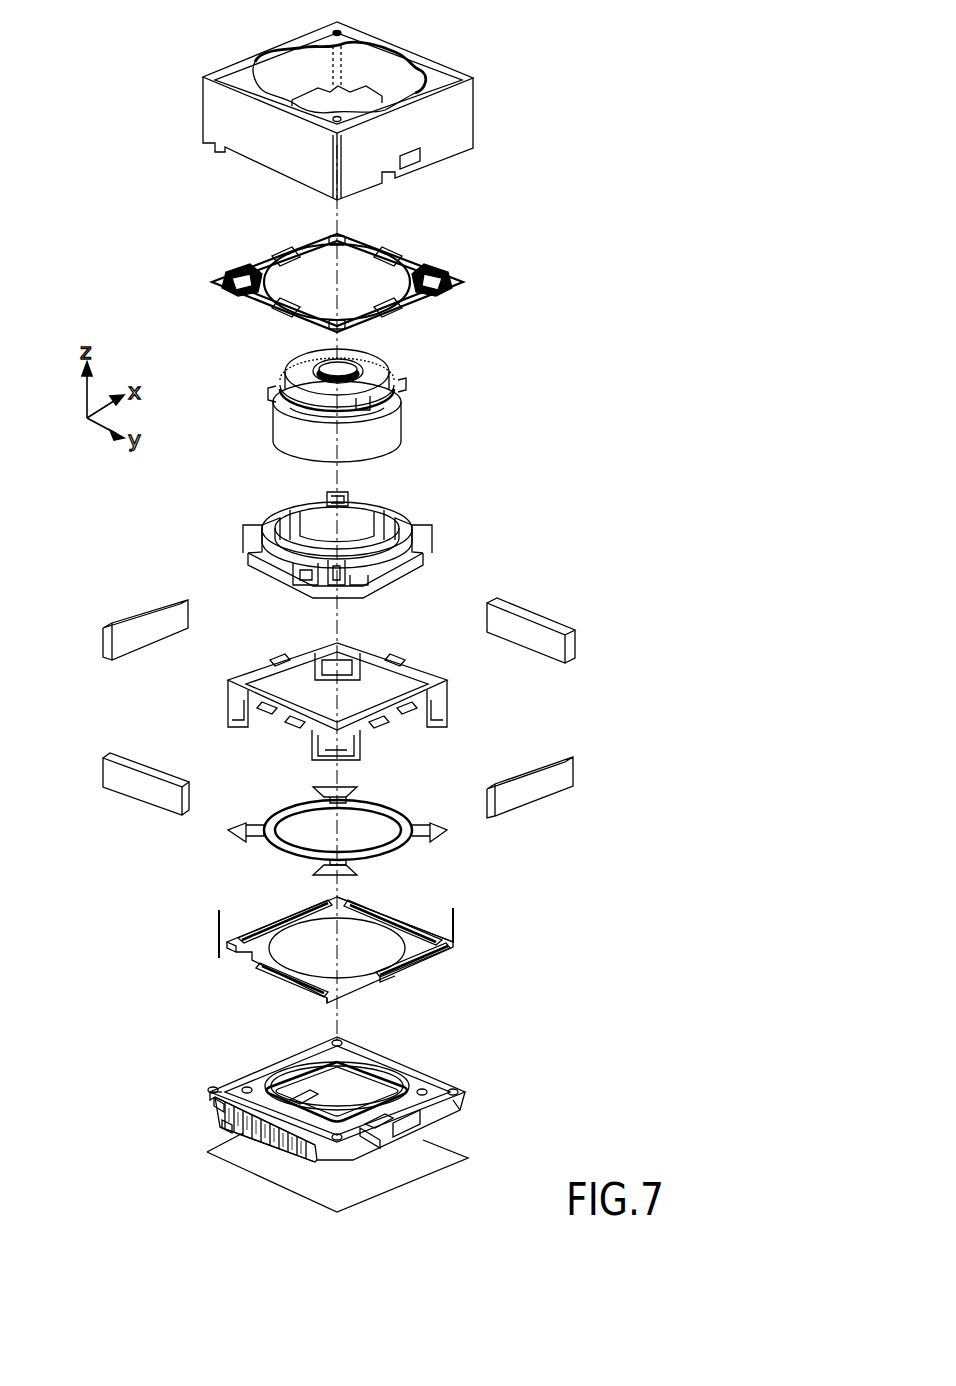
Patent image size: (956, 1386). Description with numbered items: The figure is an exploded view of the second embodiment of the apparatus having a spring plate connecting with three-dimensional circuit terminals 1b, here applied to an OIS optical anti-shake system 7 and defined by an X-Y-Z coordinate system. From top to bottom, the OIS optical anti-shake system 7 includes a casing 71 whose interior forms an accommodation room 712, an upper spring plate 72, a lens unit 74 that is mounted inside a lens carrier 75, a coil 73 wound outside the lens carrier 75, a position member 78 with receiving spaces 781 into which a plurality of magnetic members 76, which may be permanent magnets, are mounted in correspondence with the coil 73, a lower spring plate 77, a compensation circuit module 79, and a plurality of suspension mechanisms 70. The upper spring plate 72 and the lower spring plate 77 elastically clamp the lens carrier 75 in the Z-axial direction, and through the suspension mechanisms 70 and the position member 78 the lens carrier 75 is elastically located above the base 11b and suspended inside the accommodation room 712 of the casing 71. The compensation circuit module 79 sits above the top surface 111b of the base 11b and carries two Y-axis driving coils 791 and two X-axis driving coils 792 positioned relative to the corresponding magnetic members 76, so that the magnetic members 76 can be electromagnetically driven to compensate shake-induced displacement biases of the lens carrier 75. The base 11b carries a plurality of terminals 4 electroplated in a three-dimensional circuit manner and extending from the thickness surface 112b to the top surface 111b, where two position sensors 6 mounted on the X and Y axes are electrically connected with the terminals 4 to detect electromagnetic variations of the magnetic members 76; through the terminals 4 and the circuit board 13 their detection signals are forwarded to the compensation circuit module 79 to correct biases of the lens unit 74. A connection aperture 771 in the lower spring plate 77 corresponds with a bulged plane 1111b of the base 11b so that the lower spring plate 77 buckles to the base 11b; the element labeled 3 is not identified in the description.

The OIS optical anti-shake system 7 is at (626, 135).
The casing 71 is at (473, 114).
The accommodation room 712 is at (360, 96).
The upper spring plate 72 is at (422, 266).
The lens unit 74 is at (400, 395).
The coil 73 is at (420, 568).
The lens carrier 75 is at (400, 523).
The magnetic member 76 is at (165, 600).
The position member 78 is at (392, 652).
The receiving space 781 is at (277, 686).
The lower spring plate 77 is at (385, 806).
The connection aperture 771 is at (243, 822).
The compensation circuit module 79 is at (243, 912).
The Y-axis driving coil 791 is at (385, 917).
The X-axis driving coil 792 is at (275, 916).
The suspension mechanism 70 is at (219, 933).
The apparatus having a spring plate connecting with 3D circuit terminals 1b is at (180, 1082).
The base 11b is at (256, 1072).
The top surface 111b is at (396, 1070).
The bulged plane 1111b is at (210, 1094).
The thickness surface 112b is at (300, 1150).
The circuit member 3 is at (218, 1104).
The terminal 4 is at (265, 1146).
The position sensor 6 is at (224, 1124).
The circuit board 13 is at (425, 1170).